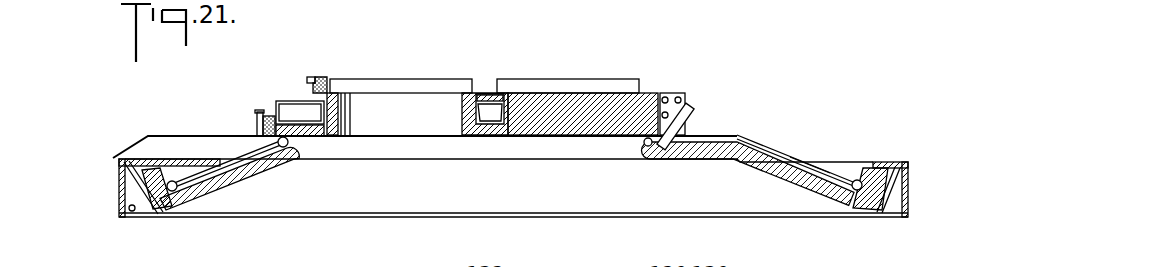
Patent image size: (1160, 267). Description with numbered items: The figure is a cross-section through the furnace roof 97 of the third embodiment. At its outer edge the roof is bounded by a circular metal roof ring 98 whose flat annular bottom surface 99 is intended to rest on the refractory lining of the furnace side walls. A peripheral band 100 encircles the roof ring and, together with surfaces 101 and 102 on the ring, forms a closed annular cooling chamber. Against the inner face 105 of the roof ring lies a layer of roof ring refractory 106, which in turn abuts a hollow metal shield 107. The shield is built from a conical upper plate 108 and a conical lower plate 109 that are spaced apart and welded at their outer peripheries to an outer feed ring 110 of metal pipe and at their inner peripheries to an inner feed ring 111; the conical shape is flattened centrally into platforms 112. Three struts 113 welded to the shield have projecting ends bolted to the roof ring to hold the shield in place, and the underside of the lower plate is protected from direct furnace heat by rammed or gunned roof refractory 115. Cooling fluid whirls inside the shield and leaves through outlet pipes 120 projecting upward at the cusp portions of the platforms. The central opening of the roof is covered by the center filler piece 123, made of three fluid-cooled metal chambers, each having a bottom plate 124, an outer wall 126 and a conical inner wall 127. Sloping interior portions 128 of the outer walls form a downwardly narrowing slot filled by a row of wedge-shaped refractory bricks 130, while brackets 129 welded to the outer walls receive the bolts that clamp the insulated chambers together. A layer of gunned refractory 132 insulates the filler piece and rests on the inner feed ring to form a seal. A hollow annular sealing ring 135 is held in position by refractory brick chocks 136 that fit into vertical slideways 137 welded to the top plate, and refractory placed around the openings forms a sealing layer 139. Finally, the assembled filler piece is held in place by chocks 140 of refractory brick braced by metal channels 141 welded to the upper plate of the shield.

The furnace roof 97 is at (797, 129).
The roof ring 98 is at (893, 162).
The flat annular bottom surface 99 is at (157, 213).
The peripheral band 100 is at (121, 152).
The surface 101 is at (127, 215).
The surface 102 is at (168, 213).
The inner face 105 is at (838, 212).
The roof ring refractory 106 is at (866, 166).
The hollow metal shield 107 is at (800, 152).
The upper plate 108 is at (787, 157).
The lower plate 109 is at (768, 172).
The outer feed ring 110 is at (856, 181).
The inner feed ring 111 is at (648, 147).
The platform 112 is at (717, 135).
The strut 113 is at (178, 136).
The roof refractory 115 is at (232, 182).
The outlet pipe 120 is at (703, 108).
The center filler piece 123 is at (697, 81).
The bottom plate 124 is at (321, 128).
The outer wall 126 is at (278, 102).
The inner wall 127 is at (338, 108).
The interior portion 128 is at (508, 108).
The bracket 129 is at (670, 92).
The wedge-shaped refractory brick 130 is at (597, 102).
The gunned refractory 132 is at (314, 132).
The sealing ring 135 is at (393, 83).
The refractory brick chock 136 is at (318, 83).
The vertical slideway 137 is at (309, 95).
The sealing layer 139 is at (477, 93).
The chock 140 is at (258, 114).
The metal channel 141 is at (262, 127).